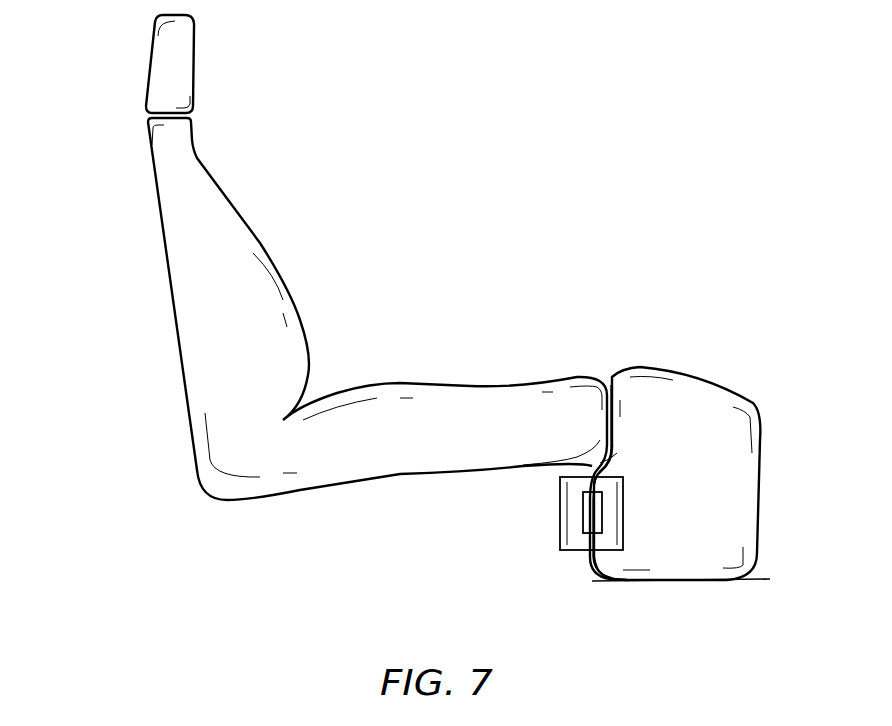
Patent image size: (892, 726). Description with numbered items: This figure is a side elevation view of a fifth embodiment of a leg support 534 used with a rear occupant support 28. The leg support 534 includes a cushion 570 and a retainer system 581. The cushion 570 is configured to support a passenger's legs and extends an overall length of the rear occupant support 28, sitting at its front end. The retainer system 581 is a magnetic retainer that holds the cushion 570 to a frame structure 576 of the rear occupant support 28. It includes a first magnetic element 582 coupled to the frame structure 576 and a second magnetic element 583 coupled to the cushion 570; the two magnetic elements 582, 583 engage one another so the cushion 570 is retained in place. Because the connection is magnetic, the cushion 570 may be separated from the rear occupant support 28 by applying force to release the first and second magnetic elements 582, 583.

The rear occupant support 28 is at (112, 153).
The leg support 534 is at (642, 476).
The cushion 570 is at (699, 412).
The frame structure 576 is at (592, 564).
The retainer system 581 is at (572, 554).
The first magnetic element 582 is at (587, 512).
The second magnetic element 583 is at (598, 515).